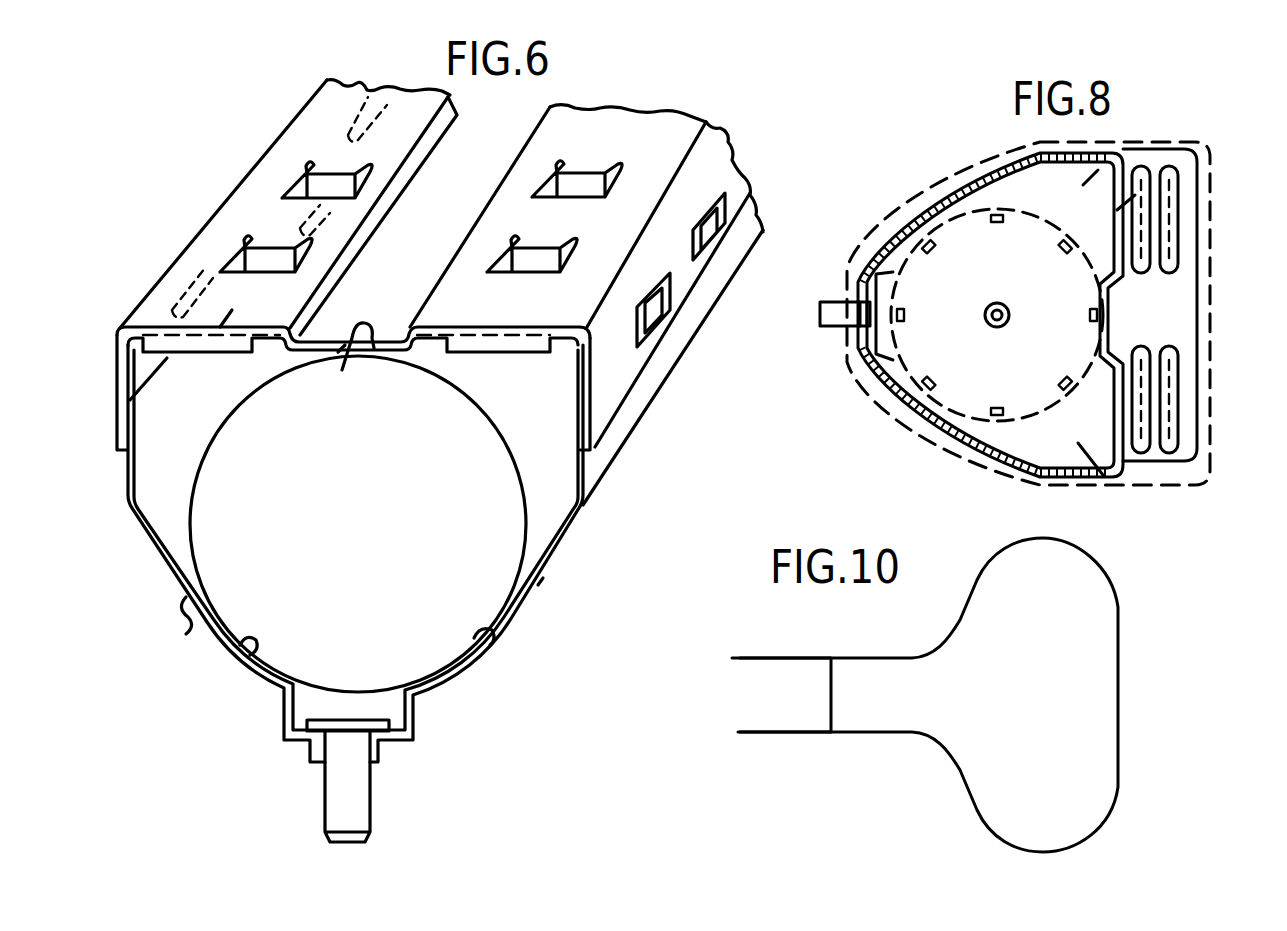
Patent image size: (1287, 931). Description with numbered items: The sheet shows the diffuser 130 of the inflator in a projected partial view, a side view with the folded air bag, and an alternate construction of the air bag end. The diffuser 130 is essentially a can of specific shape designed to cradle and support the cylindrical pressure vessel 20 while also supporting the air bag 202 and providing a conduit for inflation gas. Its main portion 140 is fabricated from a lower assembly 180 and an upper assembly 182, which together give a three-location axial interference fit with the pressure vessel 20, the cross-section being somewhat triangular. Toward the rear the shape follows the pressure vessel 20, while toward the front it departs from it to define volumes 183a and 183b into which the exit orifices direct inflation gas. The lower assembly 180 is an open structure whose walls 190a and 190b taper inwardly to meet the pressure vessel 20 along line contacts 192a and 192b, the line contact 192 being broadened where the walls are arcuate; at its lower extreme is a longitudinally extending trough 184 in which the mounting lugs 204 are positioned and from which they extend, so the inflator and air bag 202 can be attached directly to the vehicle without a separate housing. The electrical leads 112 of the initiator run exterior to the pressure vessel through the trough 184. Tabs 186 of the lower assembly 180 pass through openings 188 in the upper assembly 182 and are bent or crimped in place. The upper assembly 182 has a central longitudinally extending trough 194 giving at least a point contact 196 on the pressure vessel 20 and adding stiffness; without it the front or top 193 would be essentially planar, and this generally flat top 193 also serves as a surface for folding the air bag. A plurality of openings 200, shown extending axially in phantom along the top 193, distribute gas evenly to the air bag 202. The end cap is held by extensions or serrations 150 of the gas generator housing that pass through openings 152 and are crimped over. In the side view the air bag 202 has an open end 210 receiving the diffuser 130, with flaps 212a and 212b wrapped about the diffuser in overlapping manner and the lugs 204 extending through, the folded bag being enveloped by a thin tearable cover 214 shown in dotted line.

In FIG. 6, the pressure vessel 20 is at (191, 500).
In FIG. 6, the leads 112 is at (152, 306).
In FIG. 6, the diffuser 130 is at (180, 211).
In FIG. 6, the main portion 140 is at (590, 140).
In FIG. 8, the extensions or serrations 150 is at (912, 232).
In FIG. 8, the openings 152 is at (925, 250).
In FIG. 6, the lower assembly 180 is at (560, 530).
In FIG. 6, the upper assembly 182 is at (732, 148).
In FIG. 6, the volume 183a is at (167, 403).
In FIG. 8, the volume 183a is at (1083, 185).
In FIG. 6, the volume 183b is at (571, 392).
In FIG. 8, the volume 183b is at (1103, 475).
In FIG. 6, the trough 184 is at (413, 740).
In FIG. 8, the trough 184 is at (886, 290).
In FIG. 6, the tabs 186 is at (655, 323).
In FIG. 6, the openings 188 is at (665, 293).
In FIG. 6, the wall 190a is at (156, 629).
In FIG. 6, the wall 190b is at (540, 577).
In FIG. 8, the line contact 192 is at (1112, 323).
In FIG. 6, the line contact 192a is at (250, 655).
In FIG. 6, the line contact 192b is at (496, 630).
In FIG. 6, the front or top 193 is at (222, 325).
In FIG. 8, the front or top 193 is at (1117, 210).
In FIG. 6, the trough 194 is at (370, 370).
In FIG. 6, the contact 196 is at (340, 354).
In FIG. 6, the openings 200 is at (371, 93).
In FIG. 8, the air bag 202 is at (1198, 290).
In FIG. 10, the air bag 202 is at (1120, 684).
In FIG. 6, the mounting lugs 204 is at (370, 808).
In FIG. 10, the open end 210 is at (833, 680).
In FIG. 8, the flap 212a is at (858, 333).
In FIG. 10, the flap 212a is at (773, 735).
In FIG. 8, the flap 212b is at (847, 297).
In FIG. 10, the flap 212b is at (763, 658).
In FIG. 8, the tearable cover 214 is at (1212, 398).